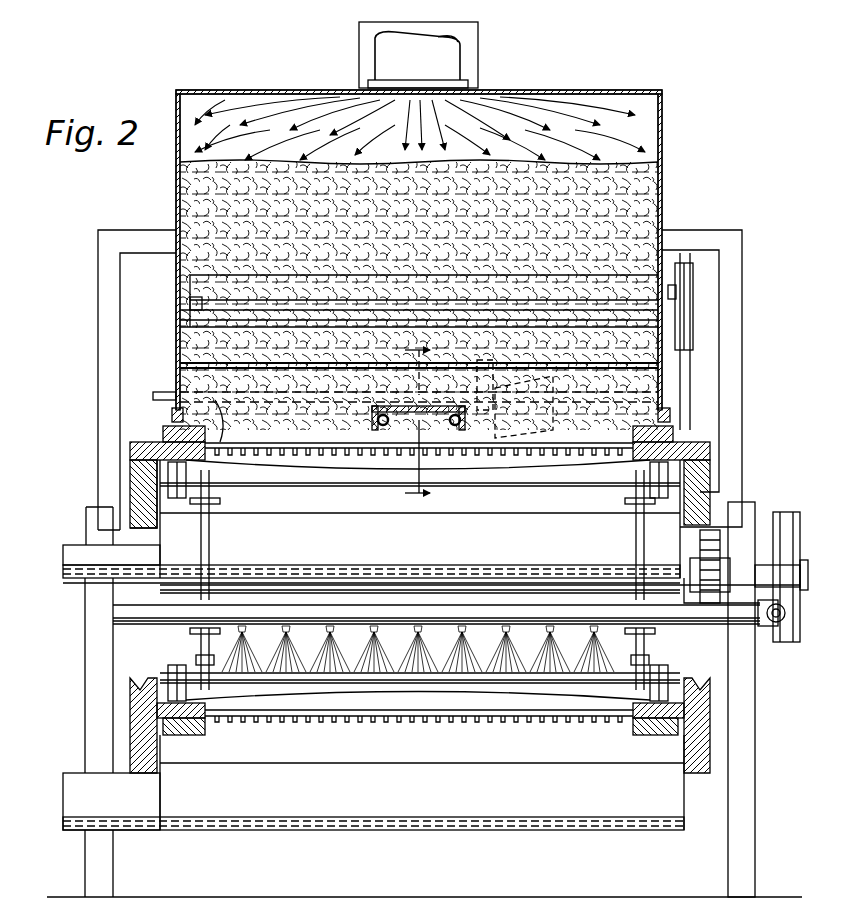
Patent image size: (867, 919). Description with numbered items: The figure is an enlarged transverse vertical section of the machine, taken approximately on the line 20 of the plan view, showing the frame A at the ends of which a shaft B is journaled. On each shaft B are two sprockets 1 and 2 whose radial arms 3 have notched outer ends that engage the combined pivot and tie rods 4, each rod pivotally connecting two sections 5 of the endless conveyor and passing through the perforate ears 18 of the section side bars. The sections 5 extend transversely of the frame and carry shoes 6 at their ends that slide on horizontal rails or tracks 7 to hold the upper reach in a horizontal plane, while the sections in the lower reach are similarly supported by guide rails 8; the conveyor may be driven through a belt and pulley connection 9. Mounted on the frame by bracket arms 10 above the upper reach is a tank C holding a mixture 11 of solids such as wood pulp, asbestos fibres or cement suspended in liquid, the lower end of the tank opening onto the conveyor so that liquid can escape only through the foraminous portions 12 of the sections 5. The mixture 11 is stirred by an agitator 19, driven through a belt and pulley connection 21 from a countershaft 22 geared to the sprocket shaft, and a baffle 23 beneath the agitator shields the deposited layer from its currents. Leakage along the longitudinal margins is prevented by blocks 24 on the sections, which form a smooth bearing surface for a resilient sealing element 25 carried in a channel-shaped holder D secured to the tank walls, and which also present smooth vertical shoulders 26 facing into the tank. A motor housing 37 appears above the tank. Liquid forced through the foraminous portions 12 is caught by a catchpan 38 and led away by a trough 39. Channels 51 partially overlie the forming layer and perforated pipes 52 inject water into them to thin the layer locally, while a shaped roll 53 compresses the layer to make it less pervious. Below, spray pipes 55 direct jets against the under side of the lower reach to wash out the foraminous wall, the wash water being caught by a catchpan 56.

The sprocket 1 is at (200, 595).
The sprocket 2 is at (645, 602).
The radial arm 3 is at (207, 505).
The combined pivot and tie rod 4 is at (290, 475).
The conveyor section 5 is at (128, 452).
The shoe 6 is at (140, 465).
The horizontal rail or track 7 is at (178, 500).
The guide rail 8 is at (135, 728).
The belt and pulley connection 9 is at (790, 648).
The bracket arm 10 is at (110, 250).
The mixture 11 is at (660, 178).
The foraminous portion 12 is at (215, 400).
The perforate ear 18 is at (168, 512).
The agitator 19 is at (200, 290).
The section line 20 is at (417, 423).
The belt and pulley connection 21 is at (683, 372).
The countershaft 22 is at (727, 578).
The baffle 23 is at (205, 360).
The block 24 is at (163, 433).
The resilient sealing element 25 is at (170, 416).
The vertical shoulder 26 is at (170, 386).
The motor 37 is at (470, 68).
The catchpan 38 is at (160, 565).
The trough 39 is at (65, 580).
The channel 51 is at (412, 414).
The perforated pipe 52 is at (383, 422).
The roll 53 is at (660, 335).
The spray pipe 55 is at (682, 603).
The catchpan 56 is at (385, 830).
The frame A is at (90, 748).
The shaft B is at (248, 598).
The tank C is at (665, 190).
The channel-shaped holder D is at (168, 410).